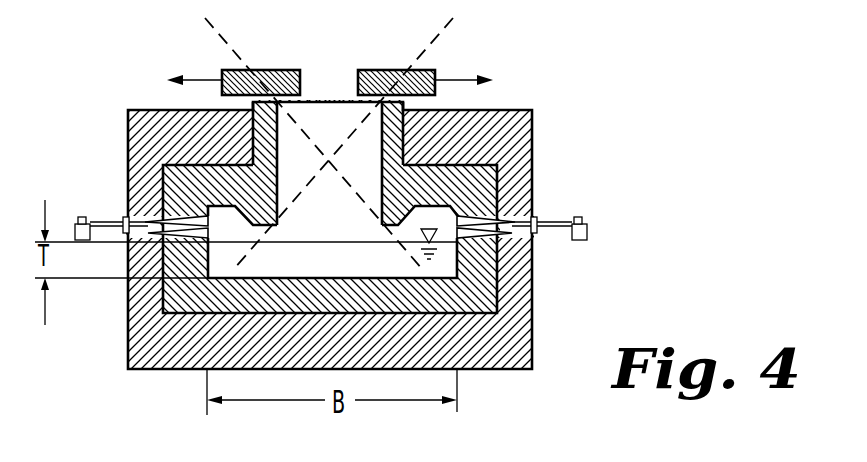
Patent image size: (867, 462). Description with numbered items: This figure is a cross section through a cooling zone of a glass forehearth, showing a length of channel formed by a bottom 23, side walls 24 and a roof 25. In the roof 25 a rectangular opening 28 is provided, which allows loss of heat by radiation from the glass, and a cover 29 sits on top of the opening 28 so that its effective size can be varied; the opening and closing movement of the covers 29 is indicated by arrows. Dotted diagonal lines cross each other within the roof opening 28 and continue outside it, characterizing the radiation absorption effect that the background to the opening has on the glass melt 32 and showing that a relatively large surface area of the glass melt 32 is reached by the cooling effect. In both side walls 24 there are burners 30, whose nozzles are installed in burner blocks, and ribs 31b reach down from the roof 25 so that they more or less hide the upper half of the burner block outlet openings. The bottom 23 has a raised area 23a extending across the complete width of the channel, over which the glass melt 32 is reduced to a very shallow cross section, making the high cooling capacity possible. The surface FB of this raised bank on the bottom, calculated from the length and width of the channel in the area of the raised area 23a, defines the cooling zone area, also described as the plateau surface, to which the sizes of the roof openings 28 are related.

The bottom 23 is at (358, 268).
The raised area 23a is at (338, 273).
The side walls 24 is at (335, 222).
The roof 25 is at (498, 134).
The openings 28 is at (343, 135).
The covers 29 is at (251, 71).
The burners 30 is at (338, 187).
The ribs 31b is at (378, 216).
The glass melt 32 is at (296, 258).
The surface of the raised bank FB is at (259, 258).